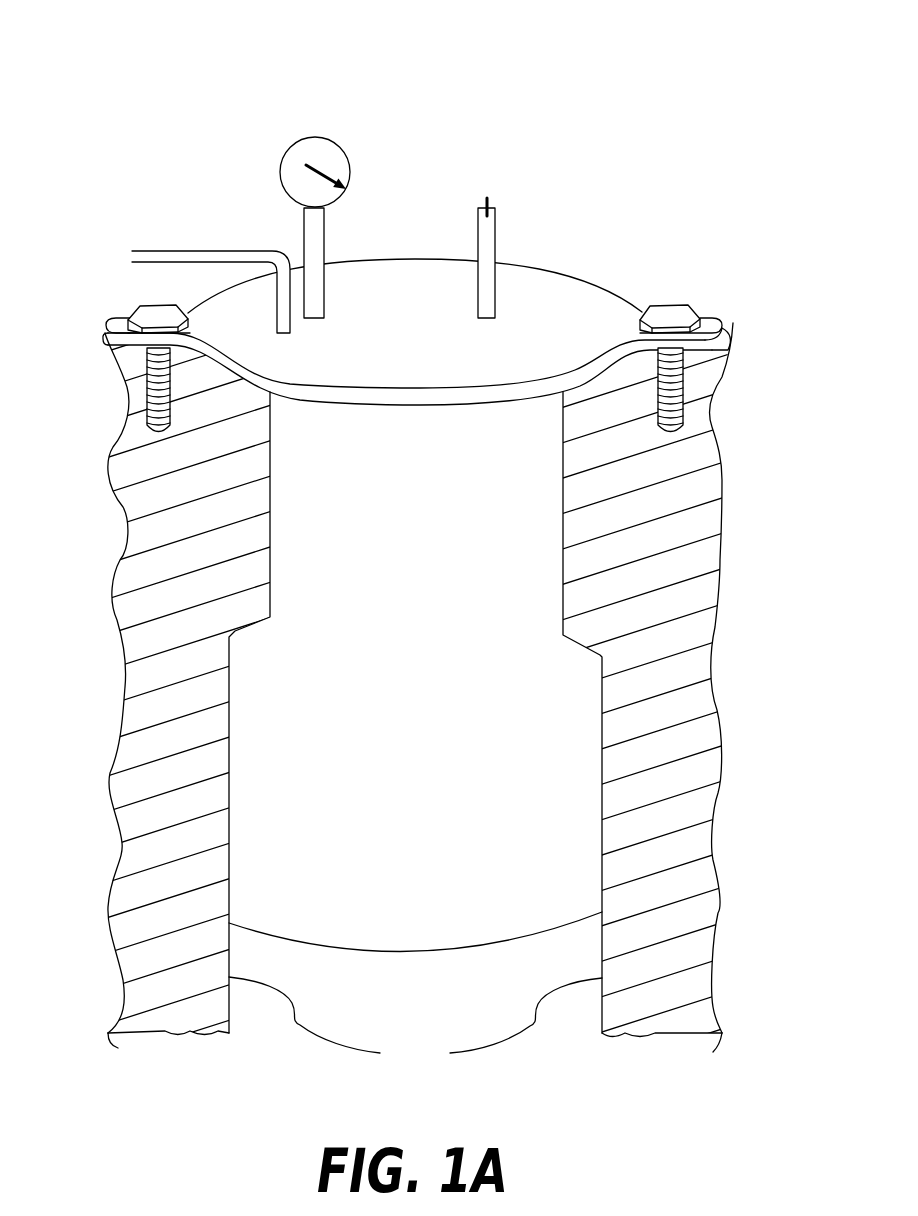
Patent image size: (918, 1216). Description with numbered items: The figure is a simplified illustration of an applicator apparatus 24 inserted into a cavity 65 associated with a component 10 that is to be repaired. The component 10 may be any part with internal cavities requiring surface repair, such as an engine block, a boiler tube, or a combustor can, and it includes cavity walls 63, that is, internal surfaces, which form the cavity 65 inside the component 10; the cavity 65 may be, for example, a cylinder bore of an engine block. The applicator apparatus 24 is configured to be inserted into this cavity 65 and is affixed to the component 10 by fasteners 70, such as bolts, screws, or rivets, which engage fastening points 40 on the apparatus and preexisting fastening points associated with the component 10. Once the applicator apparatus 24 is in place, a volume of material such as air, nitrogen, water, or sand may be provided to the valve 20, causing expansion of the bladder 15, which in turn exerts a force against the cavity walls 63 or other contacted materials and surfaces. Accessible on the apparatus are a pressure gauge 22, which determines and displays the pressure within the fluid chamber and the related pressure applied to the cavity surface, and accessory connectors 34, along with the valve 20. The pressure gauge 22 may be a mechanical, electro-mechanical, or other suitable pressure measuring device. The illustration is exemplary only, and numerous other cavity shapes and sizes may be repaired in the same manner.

The component 10 is at (128, 852).
The bladder 15 is at (430, 672).
The valve 20 is at (496, 215).
The pressure gauge 22 is at (281, 170).
The applicator apparatus 24 is at (411, 144).
The accessory connectors 34 is at (200, 251).
The fastening points 40 is at (732, 323).
The cavity walls 63 is at (415, 1026).
The cavity 65 is at (430, 999).
The fasteners 70 is at (670, 303).